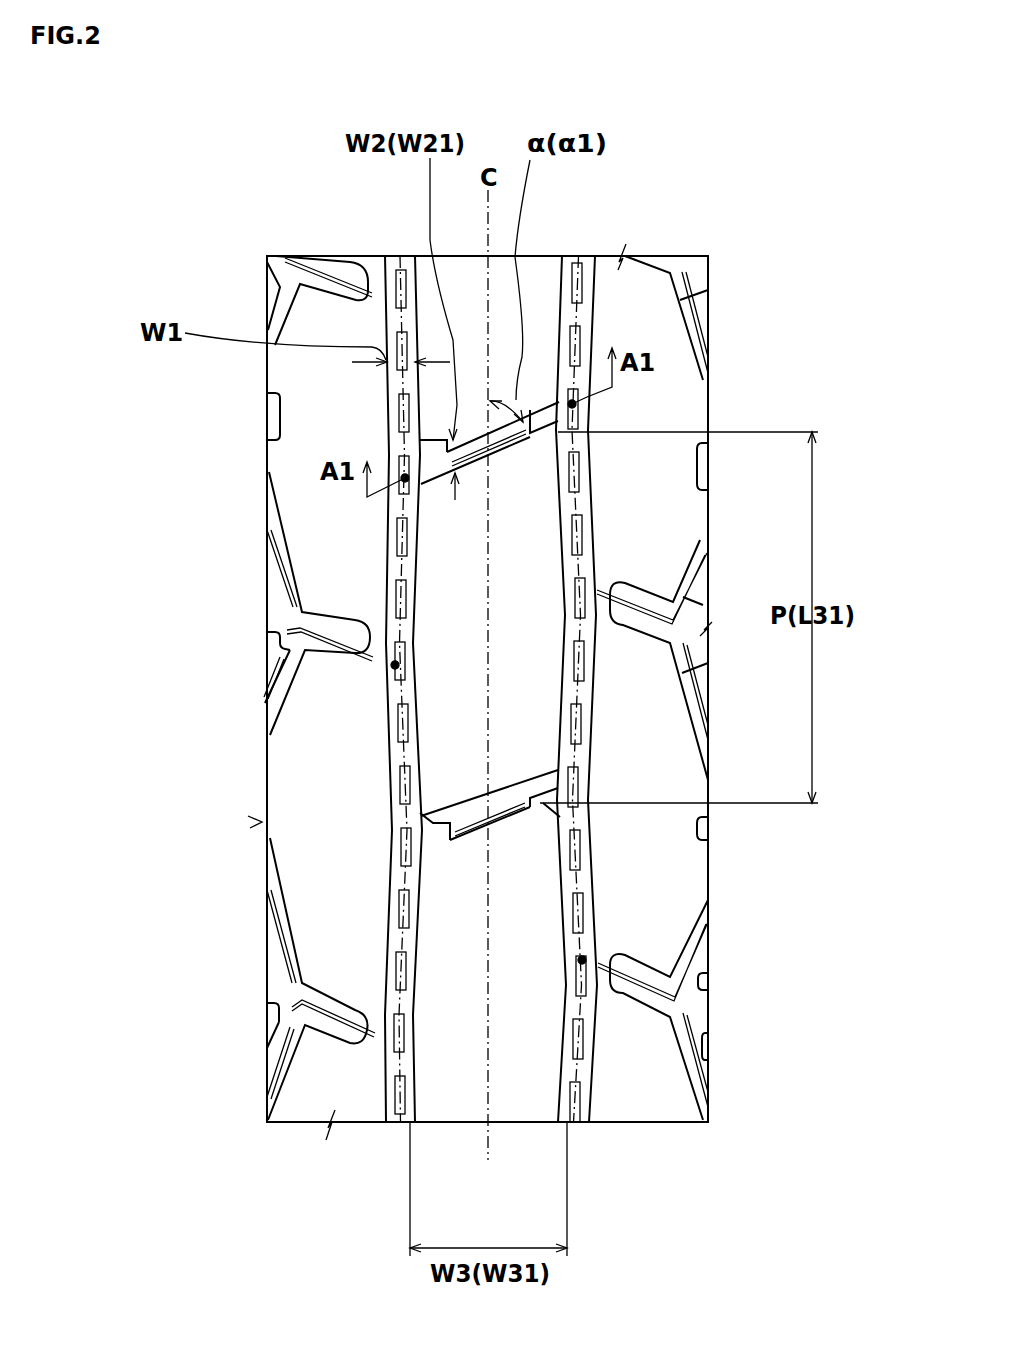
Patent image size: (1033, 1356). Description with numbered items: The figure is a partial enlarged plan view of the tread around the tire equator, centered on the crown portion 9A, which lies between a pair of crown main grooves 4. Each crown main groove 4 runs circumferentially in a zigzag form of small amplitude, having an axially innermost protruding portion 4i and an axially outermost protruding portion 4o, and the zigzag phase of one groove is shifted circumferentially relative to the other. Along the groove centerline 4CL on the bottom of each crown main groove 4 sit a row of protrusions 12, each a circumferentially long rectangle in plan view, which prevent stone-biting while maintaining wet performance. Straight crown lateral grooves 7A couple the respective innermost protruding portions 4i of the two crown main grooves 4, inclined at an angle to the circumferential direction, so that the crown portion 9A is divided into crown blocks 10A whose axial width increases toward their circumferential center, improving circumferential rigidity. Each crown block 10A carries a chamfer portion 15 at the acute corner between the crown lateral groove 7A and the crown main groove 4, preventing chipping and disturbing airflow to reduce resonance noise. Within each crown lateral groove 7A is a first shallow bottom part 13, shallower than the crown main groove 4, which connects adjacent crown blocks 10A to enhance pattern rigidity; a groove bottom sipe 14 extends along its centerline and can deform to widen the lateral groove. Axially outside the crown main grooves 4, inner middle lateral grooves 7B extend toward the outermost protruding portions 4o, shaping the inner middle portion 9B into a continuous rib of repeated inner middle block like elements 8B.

The crown main groove 4 is at (380, 1121).
The axially innermost protruding portion 4i is at (405, 478).
The axially outermost protruding portion 4o is at (395, 665).
The groove centerline 4CL is at (403, 938).
The crown lateral groove 7A is at (551, 390).
The inner middle lateral groove 7B is at (317, 1035).
The inner middle block like element 8B is at (342, 845).
The crown portion 9A is at (445, 1108).
The inner middle portion 9B is at (300, 1112).
The crown block 10A is at (480, 657).
The protrusion 12 is at (433, 817).
The first shallow bottom part 13 is at (495, 778).
The groove bottom sipe 14 is at (390, 928).
The chamfer portion 15 is at (447, 452).